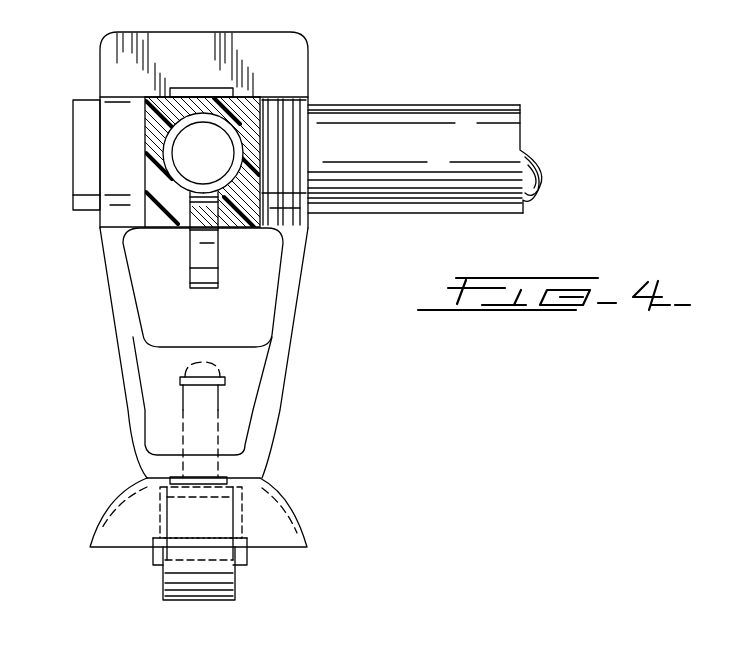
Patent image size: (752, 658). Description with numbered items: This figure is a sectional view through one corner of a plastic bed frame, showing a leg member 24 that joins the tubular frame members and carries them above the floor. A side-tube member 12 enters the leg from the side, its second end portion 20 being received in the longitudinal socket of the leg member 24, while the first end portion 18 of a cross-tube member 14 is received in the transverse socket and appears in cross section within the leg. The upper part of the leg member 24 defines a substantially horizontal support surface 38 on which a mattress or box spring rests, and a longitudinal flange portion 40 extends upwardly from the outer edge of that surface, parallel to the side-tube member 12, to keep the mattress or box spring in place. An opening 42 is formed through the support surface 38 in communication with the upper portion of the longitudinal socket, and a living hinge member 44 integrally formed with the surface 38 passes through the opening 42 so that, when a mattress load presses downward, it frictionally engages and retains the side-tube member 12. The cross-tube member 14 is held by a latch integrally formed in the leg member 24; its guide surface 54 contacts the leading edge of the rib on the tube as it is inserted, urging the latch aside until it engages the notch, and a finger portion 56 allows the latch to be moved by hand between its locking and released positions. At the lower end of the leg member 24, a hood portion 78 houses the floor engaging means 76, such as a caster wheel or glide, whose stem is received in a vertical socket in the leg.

The side-tube member 12 is at (481, 104).
The cross-tube member 14 is at (150, 154).
The first end portion 18 is at (147, 206).
The second end portion 20 is at (362, 128).
The leg member 24 is at (113, 322).
The support surface 38 is at (133, 96).
The longitudinal flange portion 40 is at (286, 43).
The opening 42 is at (236, 96).
The living hinge member 44 is at (231, 92).
The guide surface 54 is at (218, 200).
The finger portion 56 is at (203, 268).
The floor engaging means 76 is at (162, 573).
The hood portion 78 is at (280, 503).